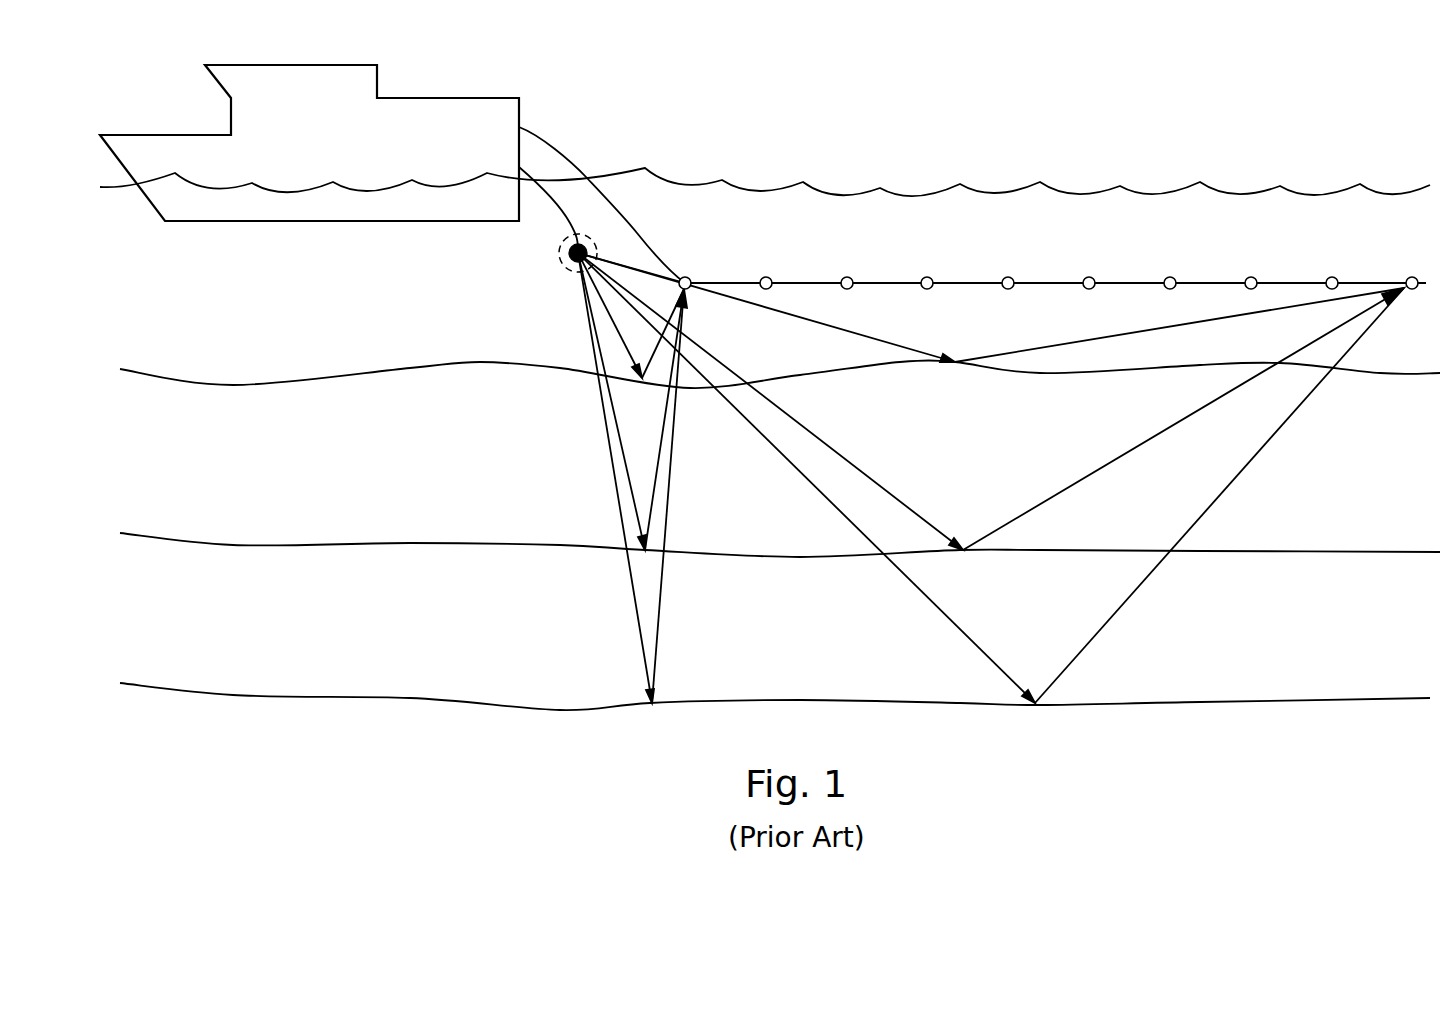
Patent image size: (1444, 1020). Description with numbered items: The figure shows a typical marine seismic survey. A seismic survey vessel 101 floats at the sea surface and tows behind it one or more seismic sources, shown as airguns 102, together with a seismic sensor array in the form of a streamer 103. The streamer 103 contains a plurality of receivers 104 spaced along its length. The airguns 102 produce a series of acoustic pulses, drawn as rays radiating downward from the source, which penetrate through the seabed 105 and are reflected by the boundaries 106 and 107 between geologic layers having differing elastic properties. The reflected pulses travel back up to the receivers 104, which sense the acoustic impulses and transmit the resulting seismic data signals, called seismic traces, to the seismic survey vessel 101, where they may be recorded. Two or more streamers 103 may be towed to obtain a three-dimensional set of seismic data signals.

The seismic survey vessel 101 is at (333, 65).
The airguns 102 is at (567, 260).
The streamer 103 is at (795, 283).
The receivers 104 is at (1010, 278).
The seabed 105 is at (253, 385).
The boundary 106 is at (260, 543).
The boundary 107 is at (250, 693).